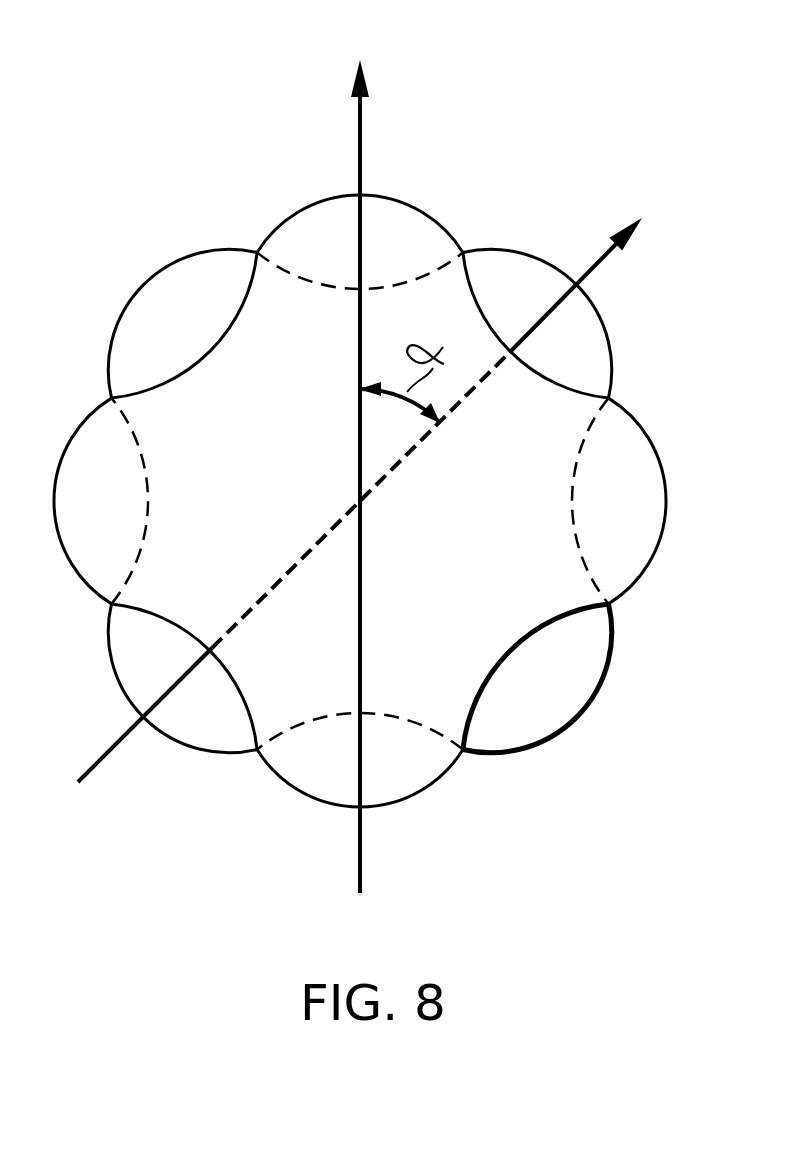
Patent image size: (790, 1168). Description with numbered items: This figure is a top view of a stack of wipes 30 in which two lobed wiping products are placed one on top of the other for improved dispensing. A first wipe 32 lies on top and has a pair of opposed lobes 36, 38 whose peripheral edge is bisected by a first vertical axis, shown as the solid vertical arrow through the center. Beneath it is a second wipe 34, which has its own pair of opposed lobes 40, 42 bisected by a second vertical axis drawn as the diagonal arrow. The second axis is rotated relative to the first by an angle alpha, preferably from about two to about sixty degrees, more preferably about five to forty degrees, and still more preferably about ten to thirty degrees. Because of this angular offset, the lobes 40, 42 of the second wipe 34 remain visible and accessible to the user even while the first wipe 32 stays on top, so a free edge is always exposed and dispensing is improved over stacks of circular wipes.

The stack of wipes 30 is at (357, 488).
The first wipe 32 is at (346, 502).
The second wipe 34 is at (531, 309).
The lobe 36 is at (382, 770).
The lobe 38 is at (385, 240).
The lobe 40 is at (587, 339).
The lobe 42 is at (135, 657).